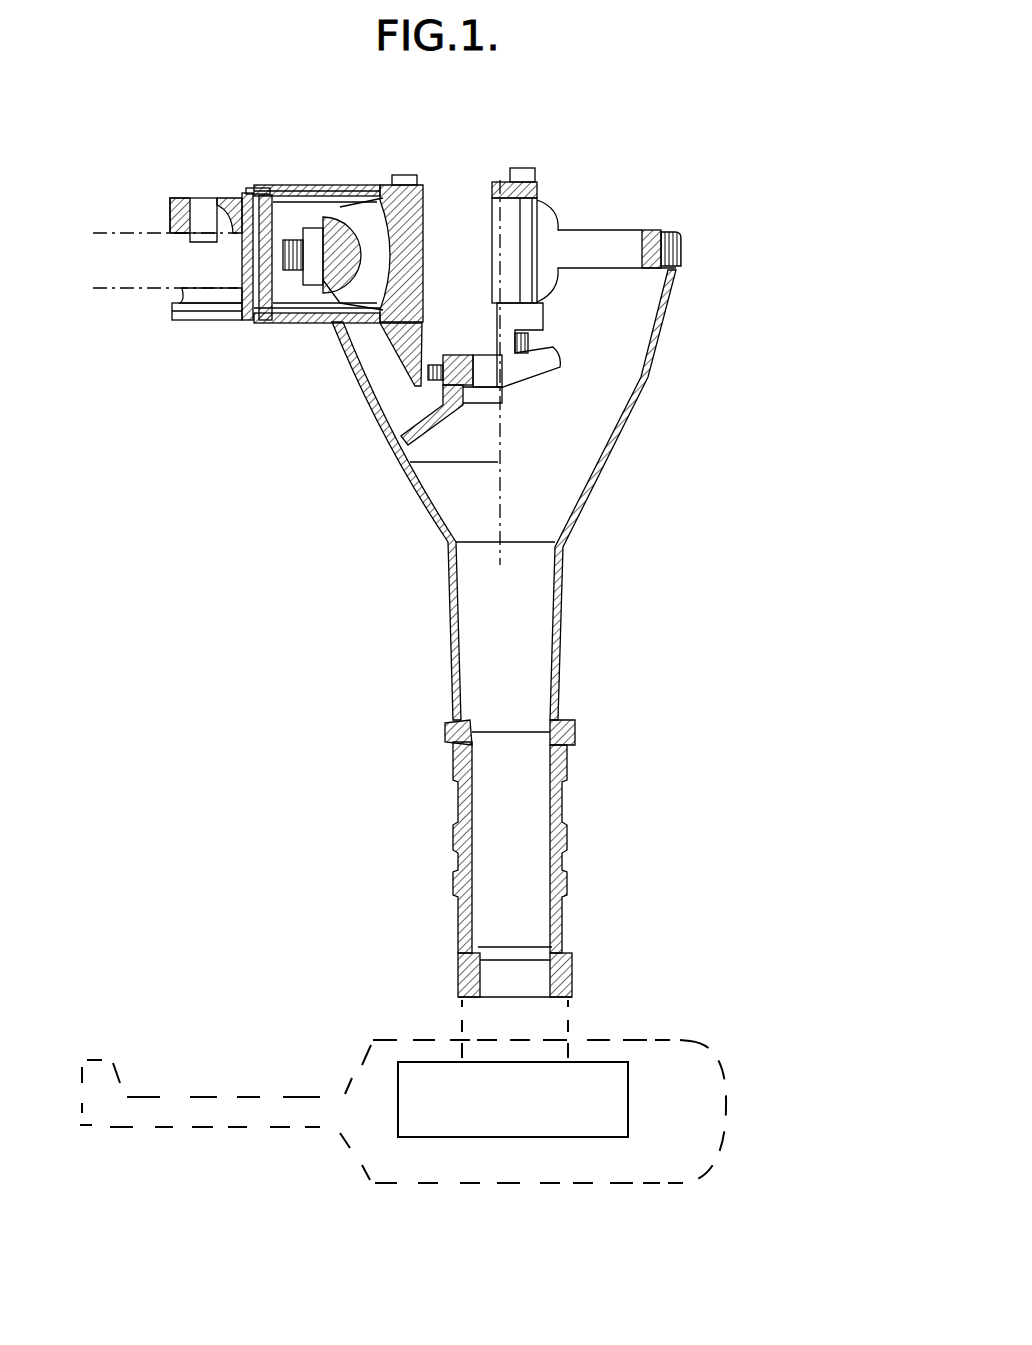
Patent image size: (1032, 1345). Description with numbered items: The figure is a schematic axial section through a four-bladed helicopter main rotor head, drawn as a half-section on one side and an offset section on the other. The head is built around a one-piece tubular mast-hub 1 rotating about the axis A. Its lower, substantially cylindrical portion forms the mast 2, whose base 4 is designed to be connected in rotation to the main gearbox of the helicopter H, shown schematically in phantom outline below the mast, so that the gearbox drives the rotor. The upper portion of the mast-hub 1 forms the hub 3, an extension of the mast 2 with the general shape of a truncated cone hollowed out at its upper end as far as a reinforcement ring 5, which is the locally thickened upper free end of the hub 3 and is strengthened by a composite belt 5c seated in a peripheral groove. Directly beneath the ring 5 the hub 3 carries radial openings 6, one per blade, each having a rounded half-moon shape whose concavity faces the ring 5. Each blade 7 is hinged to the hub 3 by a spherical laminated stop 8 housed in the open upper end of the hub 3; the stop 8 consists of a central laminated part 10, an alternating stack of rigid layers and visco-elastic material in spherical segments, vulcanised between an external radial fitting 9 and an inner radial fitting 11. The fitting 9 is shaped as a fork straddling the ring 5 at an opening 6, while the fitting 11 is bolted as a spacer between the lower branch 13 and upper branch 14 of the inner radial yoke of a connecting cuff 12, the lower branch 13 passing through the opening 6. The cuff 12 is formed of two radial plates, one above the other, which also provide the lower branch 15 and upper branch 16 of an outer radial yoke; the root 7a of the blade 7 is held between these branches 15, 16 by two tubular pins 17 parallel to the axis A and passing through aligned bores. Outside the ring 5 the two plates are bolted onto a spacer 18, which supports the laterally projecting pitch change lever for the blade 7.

The tubular mast-hub 1 is at (430, 562).
The mast 2 is at (574, 730).
The hub 3 is at (633, 421).
The base 4 is at (565, 977).
The reinforcement ring 5 is at (650, 230).
The composite belt 5c is at (683, 250).
The radial openings 6 is at (337, 330).
The blade 7 is at (122, 276).
The blade root 7a is at (205, 273).
The spherical laminated stop 8 is at (340, 202).
The external radial fitting 9 is at (327, 293).
The central laminated part 10 is at (368, 224).
The inner radial fitting 11 is at (503, 227).
The connecting cuff 12 is at (241, 324).
The lower branch of inner radial yoke 13 is at (377, 326).
The upper branch of inner radial yoke 14 is at (356, 188).
The lower branch of external radial yoke 15 is at (178, 310).
The upper branch of external radial yoke 16 is at (233, 208).
The tubular pins 17 is at (203, 209).
The spacer 18 is at (267, 317).
The axis A is at (505, 544).
The helicopter H is at (707, 1060).